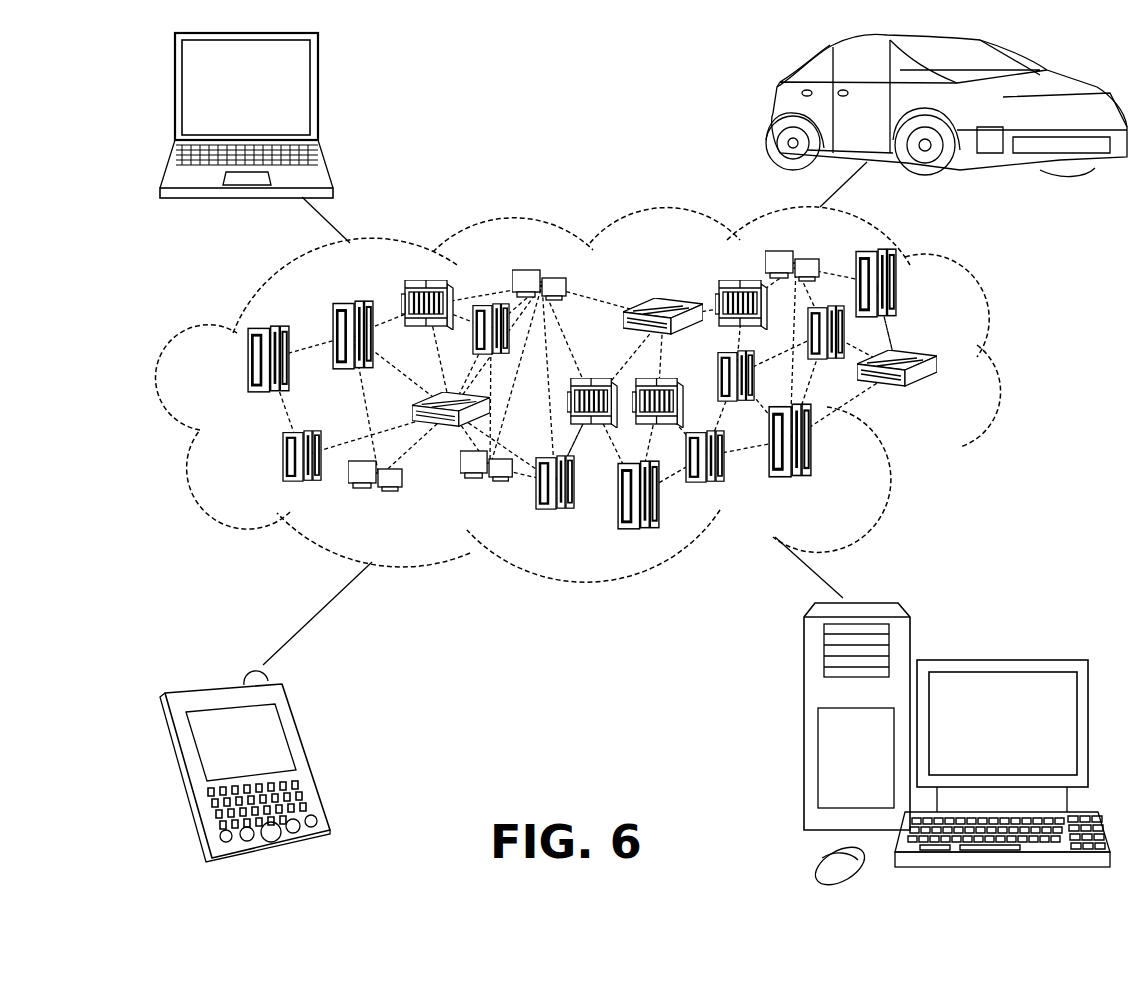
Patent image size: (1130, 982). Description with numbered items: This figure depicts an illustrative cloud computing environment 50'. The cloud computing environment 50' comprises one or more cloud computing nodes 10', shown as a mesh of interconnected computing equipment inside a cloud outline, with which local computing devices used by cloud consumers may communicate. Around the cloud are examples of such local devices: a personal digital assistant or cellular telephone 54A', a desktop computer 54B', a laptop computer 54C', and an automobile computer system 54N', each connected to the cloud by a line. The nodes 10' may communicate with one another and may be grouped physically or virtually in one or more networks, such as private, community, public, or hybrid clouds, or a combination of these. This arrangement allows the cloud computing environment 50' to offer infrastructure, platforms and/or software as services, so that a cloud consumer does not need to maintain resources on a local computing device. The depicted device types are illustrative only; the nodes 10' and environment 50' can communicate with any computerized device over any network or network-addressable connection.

The laptop computer 54C' is at (281, 115).
The automobile computer system 54N' is at (908, 105).
The personal digital assistant or cellular telephone 54A' is at (276, 766).
The desktop computer 54B' is at (957, 747).
The cloud computing environment 50' is at (1033, 357).
The cloud computing node 10' is at (995, 422).